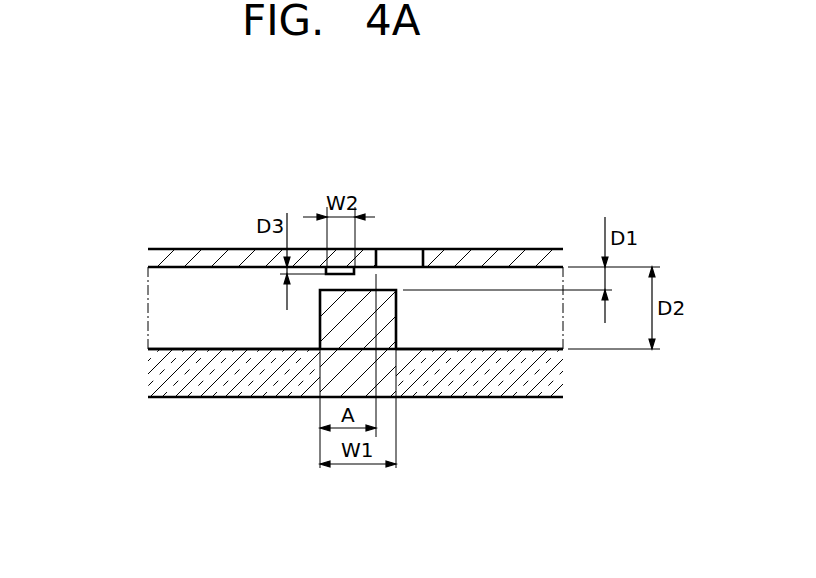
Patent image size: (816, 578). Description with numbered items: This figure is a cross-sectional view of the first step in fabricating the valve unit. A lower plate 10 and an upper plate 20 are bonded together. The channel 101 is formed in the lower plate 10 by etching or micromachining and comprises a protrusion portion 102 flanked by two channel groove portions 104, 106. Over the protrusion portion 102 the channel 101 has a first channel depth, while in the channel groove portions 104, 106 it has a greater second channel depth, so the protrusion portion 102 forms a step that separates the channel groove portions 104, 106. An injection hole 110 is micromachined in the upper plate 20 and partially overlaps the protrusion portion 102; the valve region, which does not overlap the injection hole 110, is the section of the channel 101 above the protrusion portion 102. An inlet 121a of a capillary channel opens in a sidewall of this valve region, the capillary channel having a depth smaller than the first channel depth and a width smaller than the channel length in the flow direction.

The lower plate 10 is at (158, 373).
The upper plate 20 is at (148, 256).
The channel 101 is at (483, 485).
The protrusion portion 102 is at (392, 318).
The channel groove portion 104 is at (258, 333).
The channel groove portion 106 is at (482, 335).
The injection hole 110 is at (418, 250).
The inlet 121a is at (354, 275).